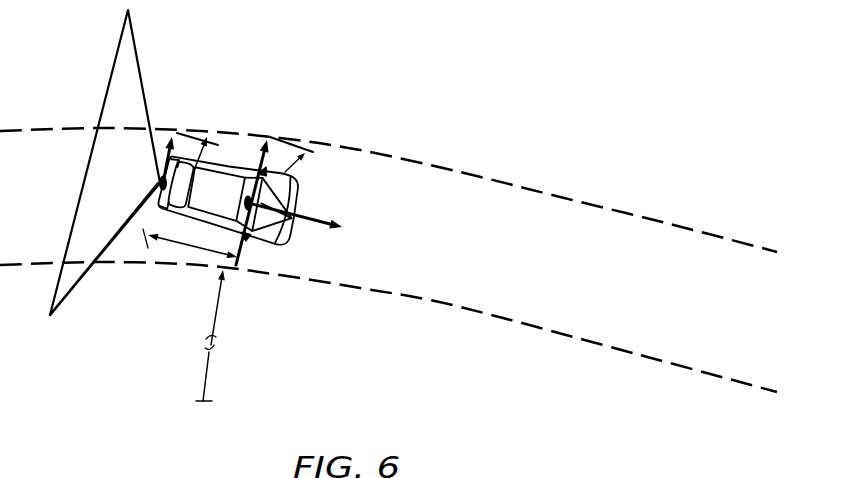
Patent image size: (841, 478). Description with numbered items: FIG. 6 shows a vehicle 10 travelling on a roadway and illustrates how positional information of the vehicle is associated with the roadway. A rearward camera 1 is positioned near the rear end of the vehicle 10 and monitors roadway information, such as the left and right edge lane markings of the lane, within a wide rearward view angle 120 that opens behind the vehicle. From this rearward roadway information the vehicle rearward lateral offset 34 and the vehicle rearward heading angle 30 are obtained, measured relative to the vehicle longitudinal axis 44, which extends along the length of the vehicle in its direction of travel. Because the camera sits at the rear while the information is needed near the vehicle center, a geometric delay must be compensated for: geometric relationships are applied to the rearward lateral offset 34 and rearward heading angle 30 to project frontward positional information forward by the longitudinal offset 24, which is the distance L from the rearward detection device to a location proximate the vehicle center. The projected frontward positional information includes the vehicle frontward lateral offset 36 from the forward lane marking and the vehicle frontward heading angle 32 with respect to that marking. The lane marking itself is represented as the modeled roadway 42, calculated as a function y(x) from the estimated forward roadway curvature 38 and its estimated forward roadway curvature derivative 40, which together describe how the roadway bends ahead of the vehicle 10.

The rearward camera 1 is at (156, 185).
The vehicle 10 is at (283, 243).
The longitudinal offset of the rearward detection device from a vehicle center 24 is at (191, 245).
The vehicle rearward heading angle 30 is at (203, 108).
The vehicle frontward heading angle 32 is at (307, 135).
The vehicle rearward lateral offset 34 is at (163, 160).
The vehicle frontward lateral offset 36 is at (285, 172).
The estimated forward roadway curvature 38 is at (203, 353).
The estimated forward roadway curvature derivative 40 is at (232, 434).
The modeled roadway 42 is at (500, 323).
The vehicle longitudinal axis 44 is at (370, 244).
The rearward view angle 120 is at (142, 80).